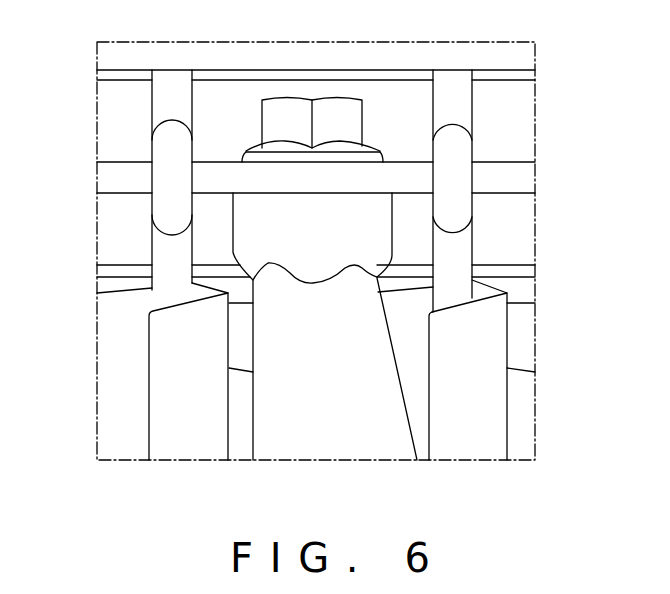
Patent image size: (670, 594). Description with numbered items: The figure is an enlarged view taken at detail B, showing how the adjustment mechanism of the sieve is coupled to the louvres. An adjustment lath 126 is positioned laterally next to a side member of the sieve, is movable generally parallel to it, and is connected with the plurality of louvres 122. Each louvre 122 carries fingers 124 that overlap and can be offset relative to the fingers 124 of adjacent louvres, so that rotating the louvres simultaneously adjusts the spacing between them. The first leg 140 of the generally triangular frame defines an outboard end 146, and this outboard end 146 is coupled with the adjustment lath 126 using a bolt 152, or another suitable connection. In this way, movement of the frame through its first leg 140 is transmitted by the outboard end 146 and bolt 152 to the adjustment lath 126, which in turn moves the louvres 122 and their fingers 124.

The detail B is at (535, 100).
The louvre 122 is at (152, 250).
The finger 124 is at (127, 445).
The adjustment lath 126 is at (513, 193).
The first leg 140 is at (338, 438).
The outboard end 146 is at (333, 235).
The bolt 152 is at (338, 117).